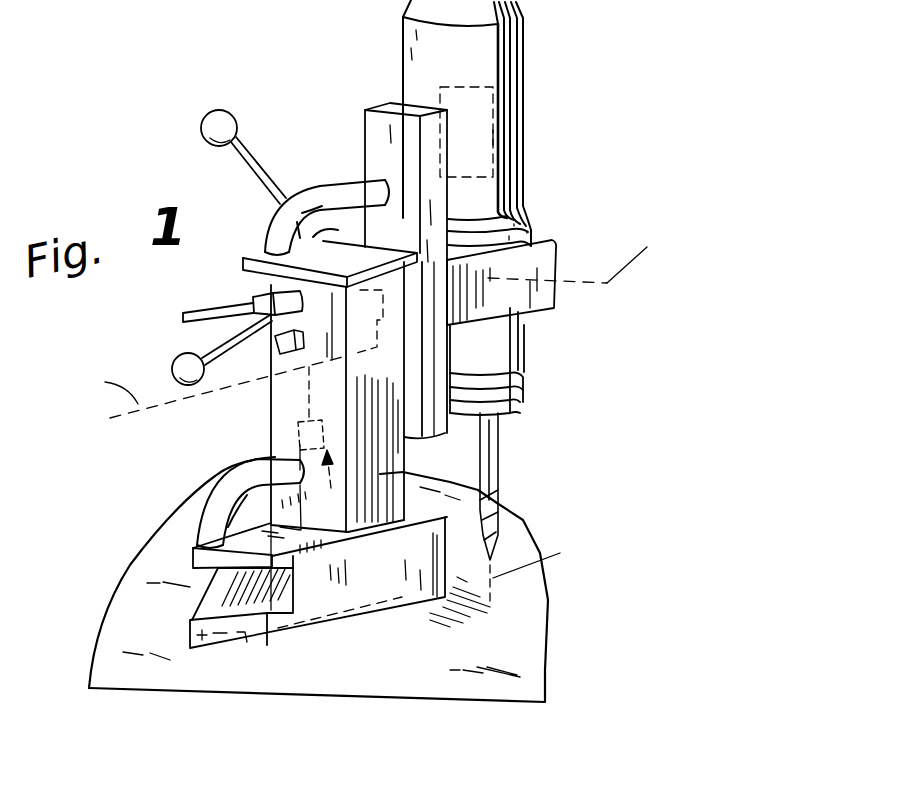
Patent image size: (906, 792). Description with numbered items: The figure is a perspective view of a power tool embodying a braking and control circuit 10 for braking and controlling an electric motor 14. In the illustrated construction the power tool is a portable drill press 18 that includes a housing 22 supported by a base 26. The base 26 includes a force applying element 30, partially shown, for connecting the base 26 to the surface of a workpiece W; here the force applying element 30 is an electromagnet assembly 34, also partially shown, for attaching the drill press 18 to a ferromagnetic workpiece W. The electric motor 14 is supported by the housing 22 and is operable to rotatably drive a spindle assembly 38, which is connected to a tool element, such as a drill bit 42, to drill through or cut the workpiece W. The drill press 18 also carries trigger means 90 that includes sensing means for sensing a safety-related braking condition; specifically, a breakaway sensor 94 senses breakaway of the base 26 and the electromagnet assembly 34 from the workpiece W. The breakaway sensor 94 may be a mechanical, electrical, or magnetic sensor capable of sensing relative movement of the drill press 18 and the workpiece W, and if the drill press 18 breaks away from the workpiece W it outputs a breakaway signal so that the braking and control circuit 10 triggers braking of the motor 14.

The braking and control circuit 10 is at (383, 323).
The electric motor 14 is at (430, 75).
The portable drill press 18 is at (578, 112).
The housing 22 is at (272, 398).
The base 26 is at (370, 588).
The force applying element 30 is at (229, 653).
The electromagnet assembly 34 is at (393, 612).
The spindle assembly 38 is at (518, 400).
The drill bit 42 is at (494, 443).
The trigger means 90 is at (320, 487).
The breakaway sensor 94 is at (298, 437).
The workpiece W is at (497, 636).